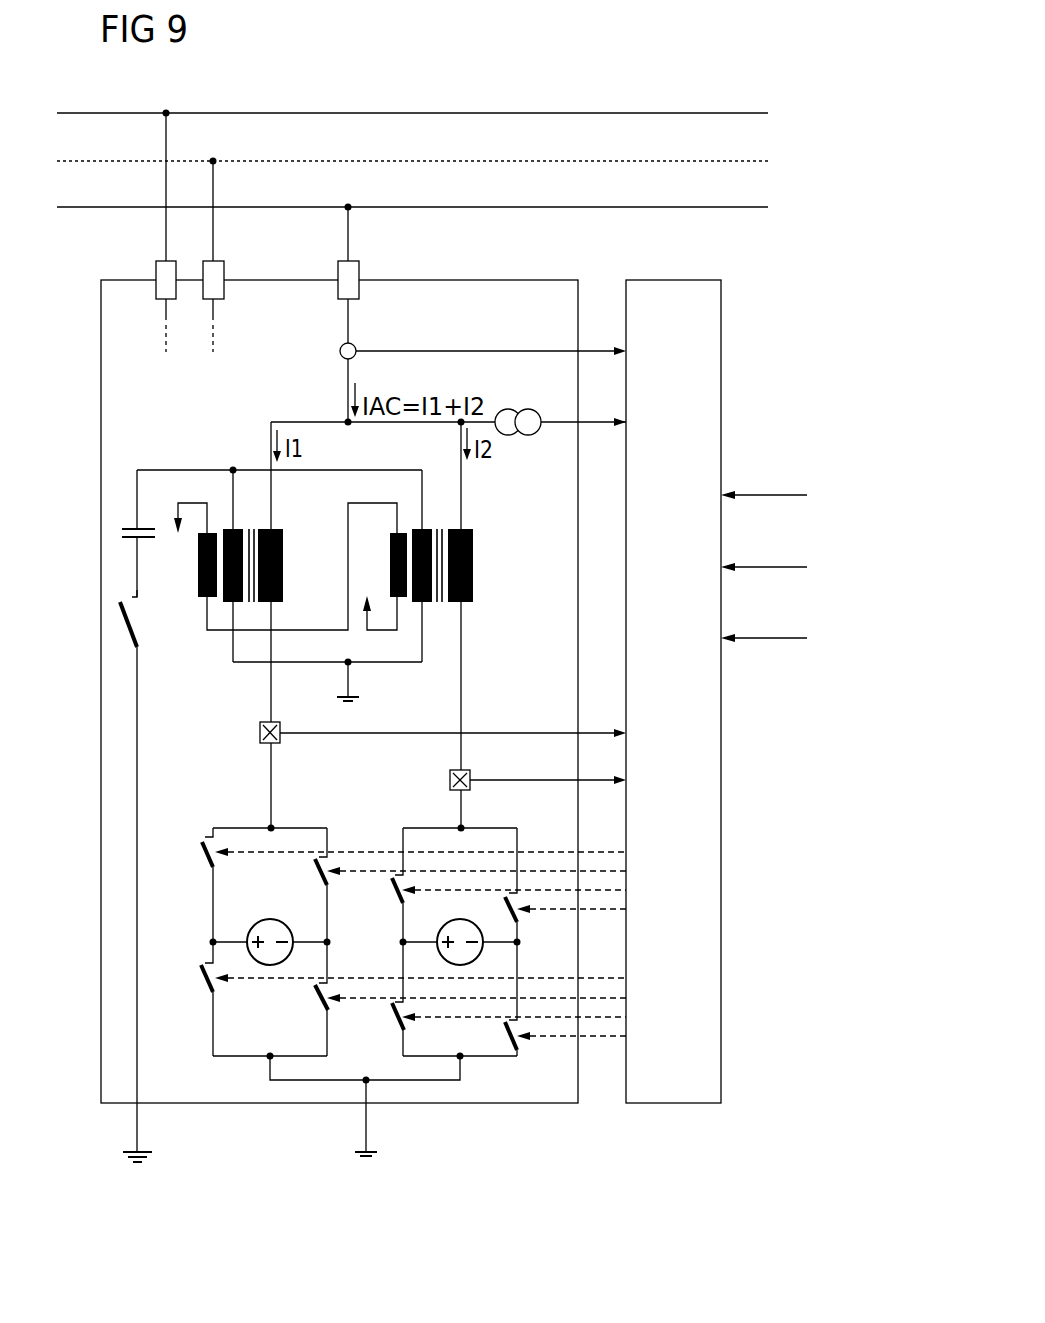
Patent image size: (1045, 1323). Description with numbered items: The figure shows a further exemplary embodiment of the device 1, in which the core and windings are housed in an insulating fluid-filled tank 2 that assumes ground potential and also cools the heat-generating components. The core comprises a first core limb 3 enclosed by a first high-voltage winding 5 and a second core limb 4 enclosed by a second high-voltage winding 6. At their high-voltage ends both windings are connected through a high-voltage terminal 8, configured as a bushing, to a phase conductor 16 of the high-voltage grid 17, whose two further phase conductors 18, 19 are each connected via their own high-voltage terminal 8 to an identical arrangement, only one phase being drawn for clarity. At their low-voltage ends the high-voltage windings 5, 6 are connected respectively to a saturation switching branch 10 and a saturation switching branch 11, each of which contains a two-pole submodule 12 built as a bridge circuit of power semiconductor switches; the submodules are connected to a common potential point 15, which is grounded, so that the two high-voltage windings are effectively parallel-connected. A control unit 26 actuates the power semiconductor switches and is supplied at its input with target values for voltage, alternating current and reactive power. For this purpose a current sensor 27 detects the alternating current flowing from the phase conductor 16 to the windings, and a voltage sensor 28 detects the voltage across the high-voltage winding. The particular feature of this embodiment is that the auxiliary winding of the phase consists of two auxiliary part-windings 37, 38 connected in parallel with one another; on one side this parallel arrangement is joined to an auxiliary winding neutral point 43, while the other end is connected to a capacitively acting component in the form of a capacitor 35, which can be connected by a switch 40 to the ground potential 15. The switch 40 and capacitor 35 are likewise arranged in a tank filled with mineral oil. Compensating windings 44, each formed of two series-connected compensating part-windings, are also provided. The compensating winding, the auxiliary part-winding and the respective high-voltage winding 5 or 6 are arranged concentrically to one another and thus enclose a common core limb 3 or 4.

The device 1 is at (305, 660).
The tank 2 is at (100, 903).
The first core limb 3 is at (273, 580).
The second core limb 4 is at (439, 565).
The first high-voltage winding 5 is at (284, 565).
The second high-voltage winding 6 is at (474, 565).
The high-voltage terminal 8 is at (156, 268).
The saturation switching branch 10 is at (209, 817).
The saturation switching branch 11 is at (399, 817).
The two-pole submodule 12 is at (213, 1072).
The common potential point 15 is at (128, 1152).
The phase conductor 16 is at (627, 207).
The high-voltage grid 17 is at (412, 117).
The phase conductor 18 is at (655, 161).
The phase conductor 19 is at (683, 113).
The control unit 26 is at (722, 907).
The current sensor 27 is at (340, 349).
The voltage sensor 28 is at (528, 408).
The capacitor 35 is at (122, 533).
The auxiliary part-winding 37 is at (229, 604).
The auxiliary part-winding 38 is at (424, 528).
The switch 40 is at (130, 630).
The auxiliary winding neutral point 43 is at (358, 697).
The compensating windings 44 is at (198, 562).